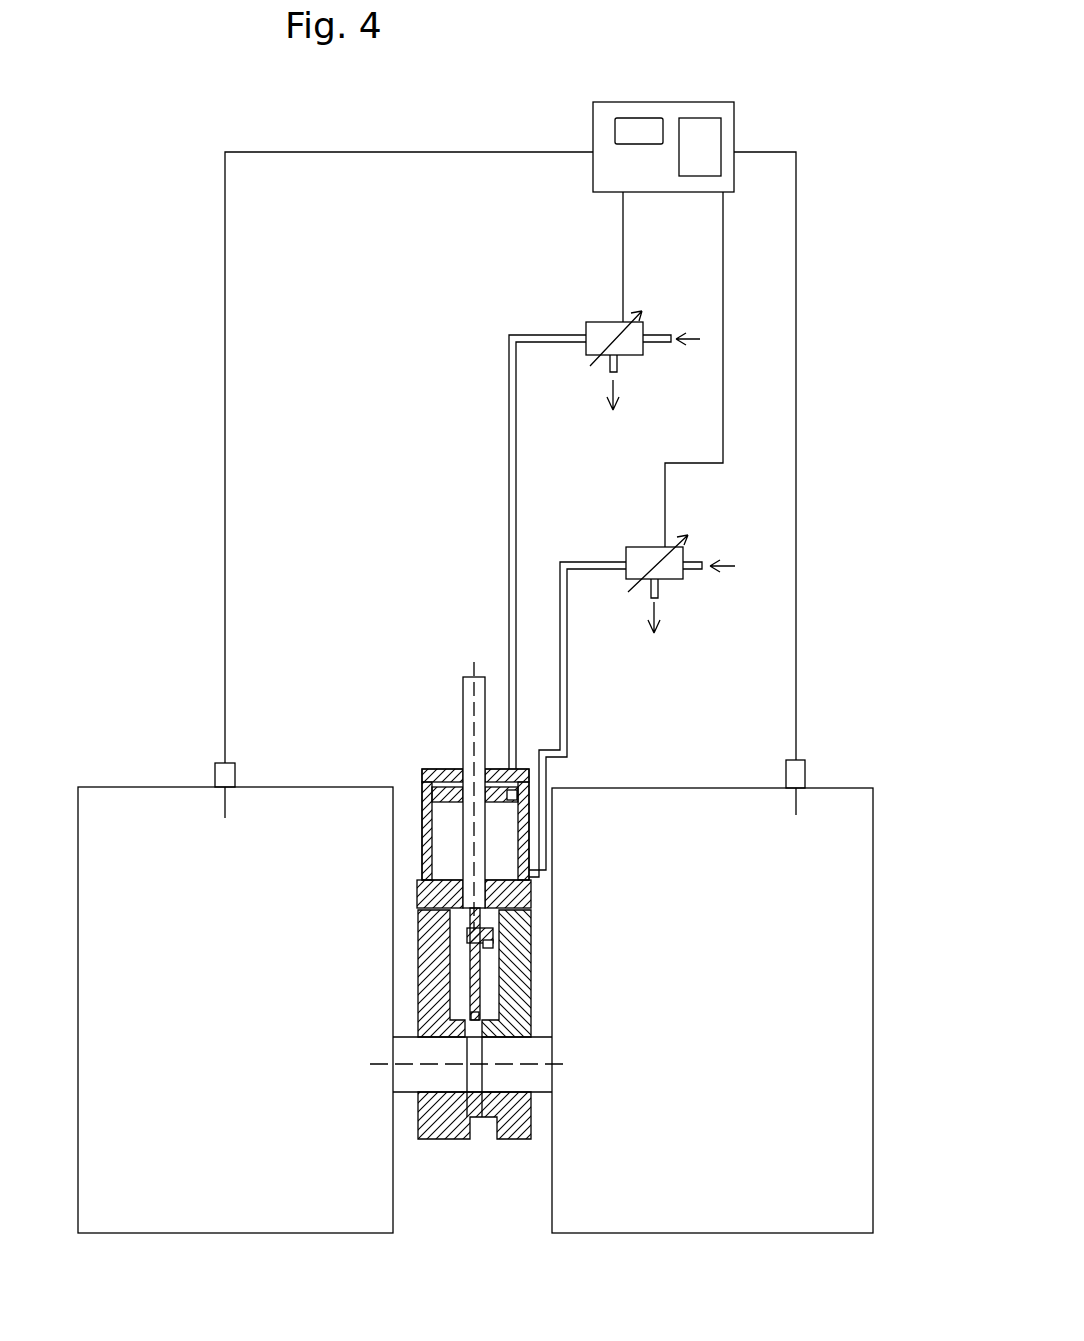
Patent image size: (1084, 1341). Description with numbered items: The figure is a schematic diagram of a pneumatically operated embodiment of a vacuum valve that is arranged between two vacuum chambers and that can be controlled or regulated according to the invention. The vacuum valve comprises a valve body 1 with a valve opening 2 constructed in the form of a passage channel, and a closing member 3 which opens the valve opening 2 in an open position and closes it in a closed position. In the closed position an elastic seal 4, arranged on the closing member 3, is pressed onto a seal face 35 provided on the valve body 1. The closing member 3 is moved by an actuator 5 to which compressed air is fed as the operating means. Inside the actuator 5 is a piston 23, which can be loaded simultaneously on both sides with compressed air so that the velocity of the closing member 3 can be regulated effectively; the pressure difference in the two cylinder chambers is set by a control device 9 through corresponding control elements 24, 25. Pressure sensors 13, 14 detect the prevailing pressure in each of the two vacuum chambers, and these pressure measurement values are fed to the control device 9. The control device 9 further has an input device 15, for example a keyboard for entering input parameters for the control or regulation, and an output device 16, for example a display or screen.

The valve body 1 is at (427, 936).
The valve opening 2 is at (433, 1080).
The closing member 3 is at (451, 974).
The elastic seal 4 is at (478, 1015).
The actuator 5 is at (548, 825).
The control device 9 is at (691, 81).
The pressure sensor 13 is at (222, 808).
The pressure sensor 14 is at (797, 803).
The input device 15 is at (707, 140).
The output device 16 is at (633, 128).
The piston 23 is at (420, 770).
The control element 24 is at (667, 364).
The control element 25 is at (708, 546).
The seal face 35 is at (472, 1093).